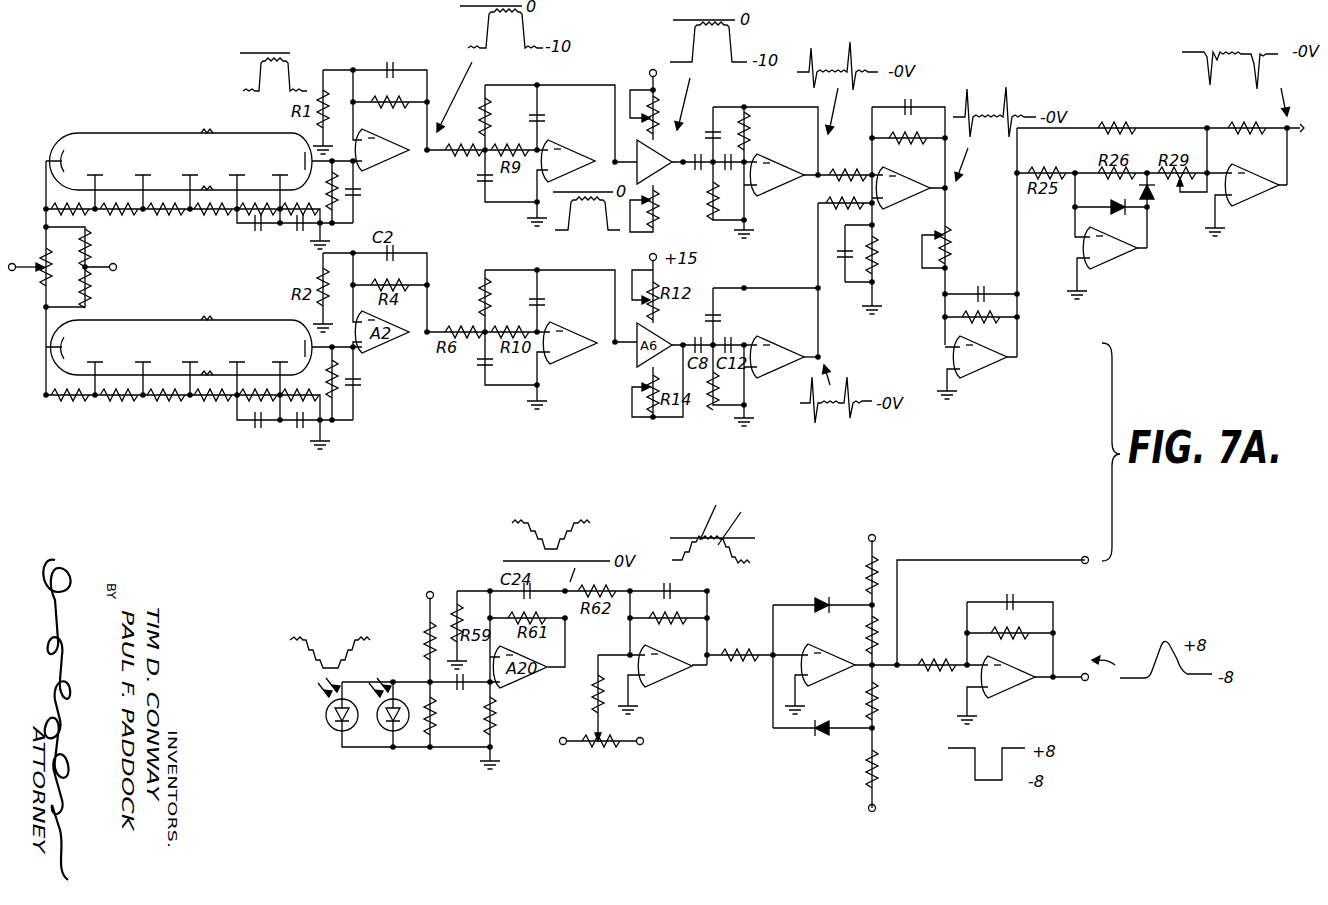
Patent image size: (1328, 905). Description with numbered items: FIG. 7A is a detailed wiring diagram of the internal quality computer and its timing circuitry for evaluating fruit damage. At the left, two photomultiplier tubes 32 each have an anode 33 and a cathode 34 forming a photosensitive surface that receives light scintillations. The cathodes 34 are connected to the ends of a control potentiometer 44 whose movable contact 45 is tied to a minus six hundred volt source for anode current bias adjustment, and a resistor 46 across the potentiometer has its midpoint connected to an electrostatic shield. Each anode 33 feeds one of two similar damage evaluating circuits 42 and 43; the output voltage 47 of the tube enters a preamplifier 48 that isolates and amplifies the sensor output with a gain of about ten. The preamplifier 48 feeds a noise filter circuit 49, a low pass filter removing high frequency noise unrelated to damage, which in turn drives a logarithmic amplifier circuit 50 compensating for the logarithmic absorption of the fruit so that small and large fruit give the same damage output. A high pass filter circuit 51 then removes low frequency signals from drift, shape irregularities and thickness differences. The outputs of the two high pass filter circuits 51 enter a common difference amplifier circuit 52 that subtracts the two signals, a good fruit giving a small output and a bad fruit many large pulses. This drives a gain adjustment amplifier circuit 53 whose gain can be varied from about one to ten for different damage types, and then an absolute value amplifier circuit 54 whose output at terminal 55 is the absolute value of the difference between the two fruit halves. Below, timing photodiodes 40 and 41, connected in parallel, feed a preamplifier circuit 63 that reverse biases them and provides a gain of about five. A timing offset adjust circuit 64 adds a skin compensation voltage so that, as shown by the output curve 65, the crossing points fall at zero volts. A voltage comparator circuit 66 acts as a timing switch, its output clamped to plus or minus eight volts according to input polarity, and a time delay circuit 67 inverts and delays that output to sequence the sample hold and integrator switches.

The photomultiplier tube 32 is at (156, 123).
The anode 33 is at (302, 160).
The cathode 34 is at (63, 163).
The silicon photodiode 40 is at (328, 732).
The silicon photodiode 41 is at (380, 740).
The damage evaluating circuit 42 is at (441, 66).
The damage evaluating circuit 43 is at (482, 388).
The control potentiometer 44 is at (58, 259).
The movable contact 45 is at (42, 262).
The resistor 46 is at (88, 234).
The output voltage 47 is at (299, 70).
The preamplifier 48 is at (401, 162).
The noise filter circuit 49 is at (596, 142).
The logarithmic amplifier circuit 50 is at (676, 182).
The high pass filter circuit 51 is at (782, 203).
The difference amplifier circuit 52 is at (928, 200).
The gain adjustment amplifier circuit 53 is at (1022, 322).
The absolute value amplifier circuit 54 is at (1184, 215).
The output terminal 55 is at (1304, 138).
The preamplifier circuit 63 is at (507, 742).
The timing offset adjust circuit 64 is at (688, 688).
The representative output curve 65 is at (709, 582).
The voltage comparator circuit 66 is at (932, 737).
The time delay circuit 67 is at (1030, 692).